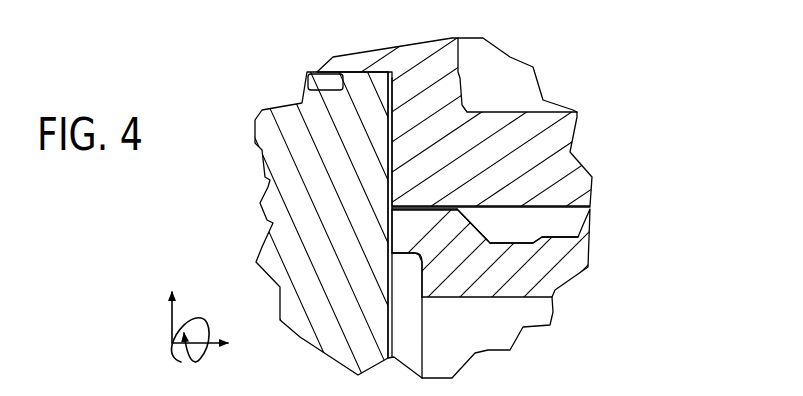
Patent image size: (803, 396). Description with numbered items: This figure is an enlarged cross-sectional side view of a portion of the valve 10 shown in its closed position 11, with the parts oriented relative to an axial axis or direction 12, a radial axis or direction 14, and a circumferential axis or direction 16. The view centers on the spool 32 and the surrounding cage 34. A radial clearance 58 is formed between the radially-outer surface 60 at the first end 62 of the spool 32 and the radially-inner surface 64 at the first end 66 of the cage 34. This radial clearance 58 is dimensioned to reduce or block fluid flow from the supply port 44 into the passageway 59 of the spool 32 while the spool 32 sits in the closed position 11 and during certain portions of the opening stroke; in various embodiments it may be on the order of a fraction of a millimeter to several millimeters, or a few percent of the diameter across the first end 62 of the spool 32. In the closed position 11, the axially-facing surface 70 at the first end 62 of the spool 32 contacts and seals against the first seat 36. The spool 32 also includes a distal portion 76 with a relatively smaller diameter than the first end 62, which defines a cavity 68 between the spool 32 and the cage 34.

The valve 10 is at (579, 88).
The closed position 11 is at (582, 52).
The axial axis or direction 12 is at (187, 347).
The radial axis or direction 14 is at (172, 323).
The circumferential axis or direction 16 is at (210, 340).
The spool 32 is at (540, 266).
The cage 34 is at (553, 143).
The first seat 36 is at (310, 110).
The supply port 44 is at (515, 247).
The radial clearance 58 is at (417, 207).
The passageway 59 is at (490, 337).
The radially-outer surface 60 is at (441, 208).
The first end 62 is at (403, 235).
The radially-inner surface 64 is at (443, 208).
The first end 66 is at (413, 83).
The cavity 68 is at (577, 213).
The axially-facing surface 70 is at (387, 218).
The distal portion 76 is at (521, 246).